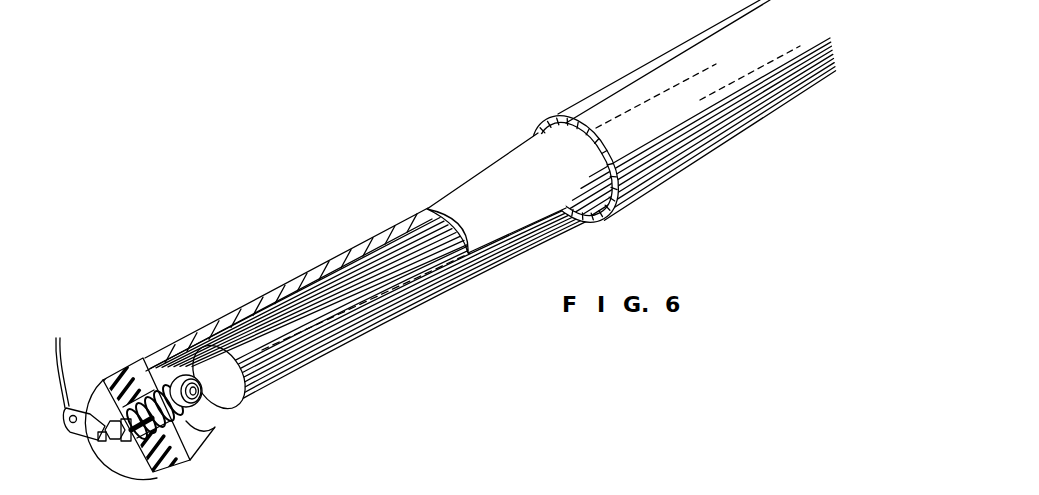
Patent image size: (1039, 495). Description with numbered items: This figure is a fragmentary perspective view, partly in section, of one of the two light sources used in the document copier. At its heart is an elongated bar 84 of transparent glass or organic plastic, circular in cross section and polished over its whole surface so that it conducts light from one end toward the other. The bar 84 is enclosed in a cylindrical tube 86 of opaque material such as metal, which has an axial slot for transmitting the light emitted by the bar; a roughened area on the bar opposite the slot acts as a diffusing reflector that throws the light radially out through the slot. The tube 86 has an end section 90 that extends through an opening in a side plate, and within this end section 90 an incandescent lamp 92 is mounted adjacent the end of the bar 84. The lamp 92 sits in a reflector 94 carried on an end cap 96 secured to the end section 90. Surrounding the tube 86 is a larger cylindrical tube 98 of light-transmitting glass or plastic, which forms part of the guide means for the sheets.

The bar 84 is at (366, 297).
The cylindrical tube 86 is at (482, 193).
The end section 90 is at (213, 428).
The incandescent lamp 92 is at (184, 378).
The reflector 94 is at (153, 370).
The end cap 96 is at (133, 364).
The cylindrical tube 98 is at (600, 112).